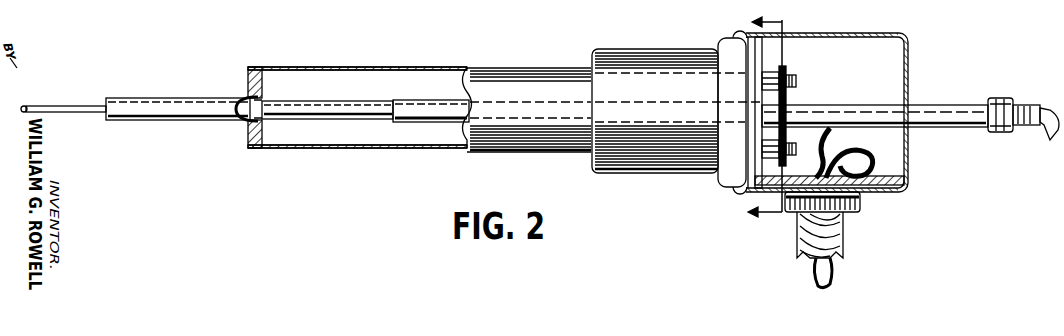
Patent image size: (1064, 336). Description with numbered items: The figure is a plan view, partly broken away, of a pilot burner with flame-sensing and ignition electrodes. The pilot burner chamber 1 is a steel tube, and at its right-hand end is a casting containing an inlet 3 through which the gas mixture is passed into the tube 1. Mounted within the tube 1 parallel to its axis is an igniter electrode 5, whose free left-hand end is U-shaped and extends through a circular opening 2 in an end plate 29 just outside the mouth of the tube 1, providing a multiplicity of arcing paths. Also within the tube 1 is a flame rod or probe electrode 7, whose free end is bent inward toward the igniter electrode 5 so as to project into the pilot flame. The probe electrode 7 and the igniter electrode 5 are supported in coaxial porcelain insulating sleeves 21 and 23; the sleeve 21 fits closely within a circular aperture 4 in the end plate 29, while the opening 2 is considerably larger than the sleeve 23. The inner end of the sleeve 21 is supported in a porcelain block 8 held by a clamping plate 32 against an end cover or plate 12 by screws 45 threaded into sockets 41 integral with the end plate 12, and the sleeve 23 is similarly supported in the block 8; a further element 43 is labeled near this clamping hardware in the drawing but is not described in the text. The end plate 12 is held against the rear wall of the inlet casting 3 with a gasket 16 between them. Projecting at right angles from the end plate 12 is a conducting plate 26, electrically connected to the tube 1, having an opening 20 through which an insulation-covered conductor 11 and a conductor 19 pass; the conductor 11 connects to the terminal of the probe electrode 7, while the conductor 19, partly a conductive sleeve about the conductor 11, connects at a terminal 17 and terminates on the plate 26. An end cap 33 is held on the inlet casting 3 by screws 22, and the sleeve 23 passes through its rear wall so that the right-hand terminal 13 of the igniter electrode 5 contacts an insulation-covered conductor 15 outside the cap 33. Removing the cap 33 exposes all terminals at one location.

The pilot burner chamber 1 is at (280, 67).
The circular opening 2 is at (262, 122).
The inlet 3 is at (606, 49).
The circular aperture 4 is at (746, 115).
The igniter electrode 5 is at (240, 101).
The flame rod or probe electrode 7 is at (34, 104).
The porcelain block 8 is at (787, 100).
The insulation-covered conductor 11 is at (842, 152).
The end cover or plate 12 is at (735, 187).
The electric terminal 13 is at (1010, 98).
The insulation-covered conductor 15 is at (1048, 108).
The gasket 16 is at (722, 46).
The terminal 17 is at (862, 204).
The conductor 19 is at (868, 176).
The opening 20 is at (816, 176).
The insulating sleeve 21 is at (186, 92).
The screws 22 is at (735, 30).
The insulating sleeve 23 is at (402, 100).
The conducting plate 26 is at (895, 177).
The end plate 29 is at (252, 140).
The clamping plate 32 is at (779, 76).
The end cap 33 is at (858, 34).
The sockets 41 is at (781, 66).
The lower nut 43 is at (768, 178).
The screws 45 is at (796, 80).